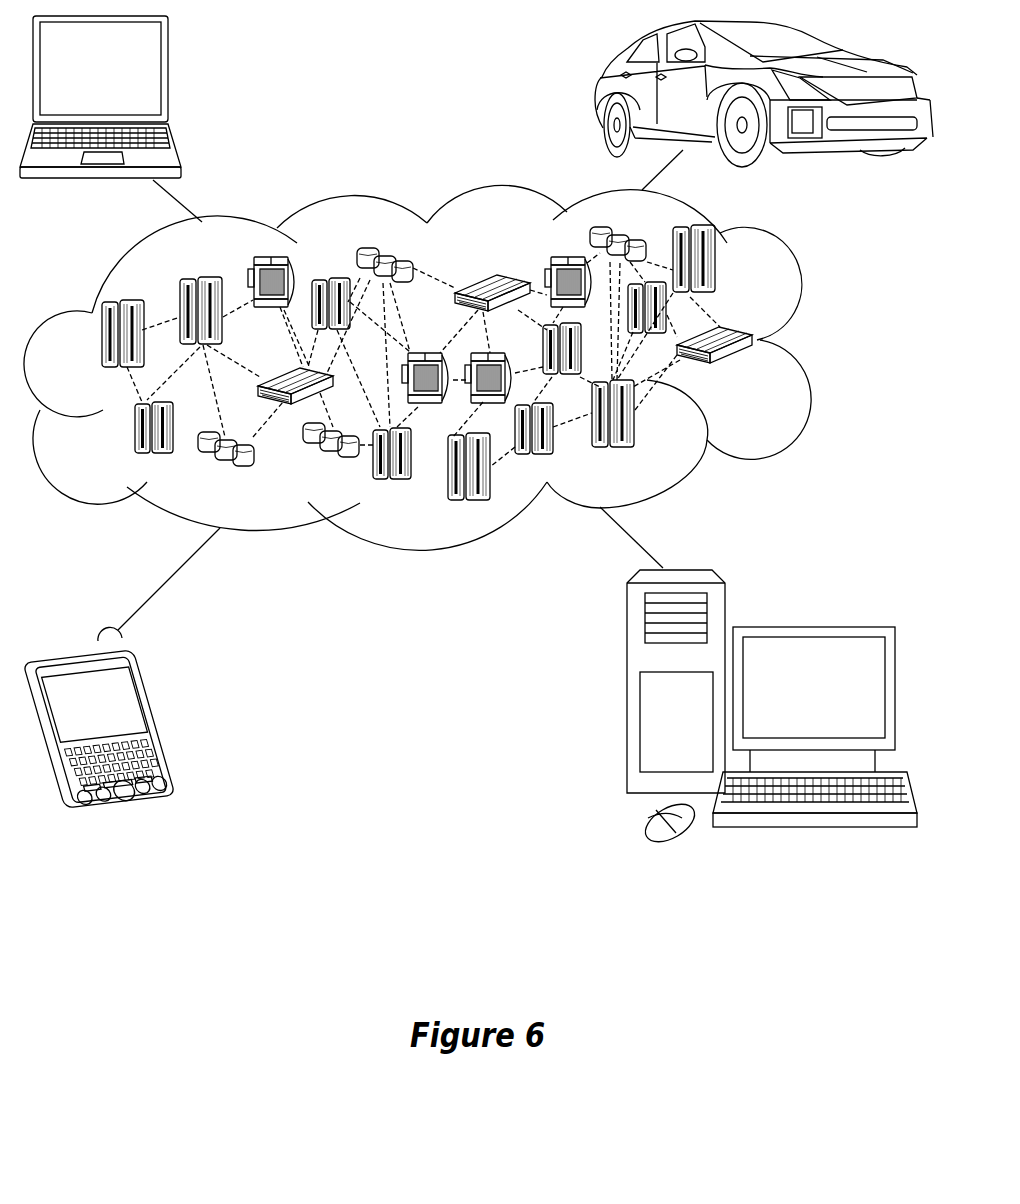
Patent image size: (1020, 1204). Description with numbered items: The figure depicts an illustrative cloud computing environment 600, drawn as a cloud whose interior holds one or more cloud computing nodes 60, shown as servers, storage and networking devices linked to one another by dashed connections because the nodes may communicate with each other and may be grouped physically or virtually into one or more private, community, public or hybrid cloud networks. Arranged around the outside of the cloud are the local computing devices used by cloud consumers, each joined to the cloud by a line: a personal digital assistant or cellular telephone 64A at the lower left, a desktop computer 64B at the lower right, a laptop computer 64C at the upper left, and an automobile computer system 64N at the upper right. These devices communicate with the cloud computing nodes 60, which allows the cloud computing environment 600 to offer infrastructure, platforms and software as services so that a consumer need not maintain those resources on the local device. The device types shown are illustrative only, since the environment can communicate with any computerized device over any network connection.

The cloud computing nodes 60 is at (808, 347).
The cloud computing environment 600 is at (762, 374).
The personal digital assistant (PDA) or cellular telephone 64A is at (160, 712).
The desktop computer 64B is at (808, 623).
The laptop computer 64C is at (170, 76).
The automobile computer system 64N is at (600, 98).